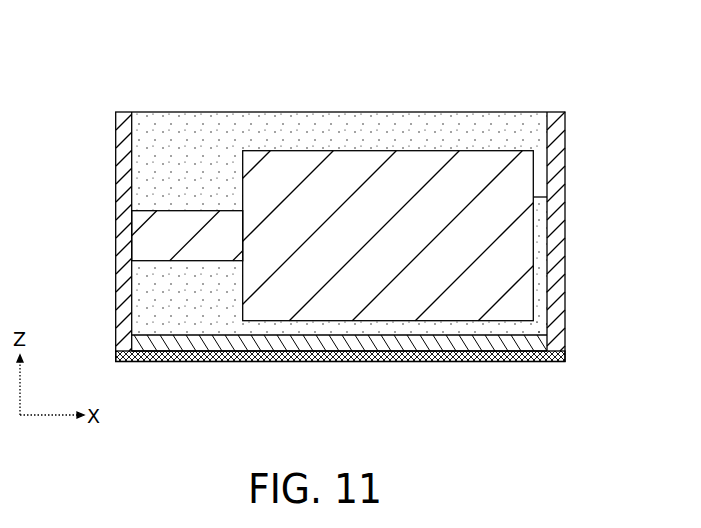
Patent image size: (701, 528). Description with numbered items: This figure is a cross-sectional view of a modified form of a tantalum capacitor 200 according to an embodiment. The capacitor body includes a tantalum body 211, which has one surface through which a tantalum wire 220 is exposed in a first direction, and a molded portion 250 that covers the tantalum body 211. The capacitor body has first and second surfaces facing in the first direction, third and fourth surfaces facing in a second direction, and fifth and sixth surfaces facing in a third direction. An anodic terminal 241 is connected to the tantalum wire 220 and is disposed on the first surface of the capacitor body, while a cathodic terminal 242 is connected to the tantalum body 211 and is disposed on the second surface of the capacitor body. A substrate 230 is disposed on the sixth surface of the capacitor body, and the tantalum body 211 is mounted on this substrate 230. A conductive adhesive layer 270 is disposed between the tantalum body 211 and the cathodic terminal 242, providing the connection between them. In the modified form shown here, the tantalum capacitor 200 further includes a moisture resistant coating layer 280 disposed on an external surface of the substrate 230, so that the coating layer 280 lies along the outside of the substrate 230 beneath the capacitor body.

The tantalum capacitor 200 is at (362, 47).
The tantalum body 211 is at (427, 165).
The tantalum wire 220 is at (211, 216).
The substrate 230 is at (330, 343).
The anodic terminal 241 is at (116, 237).
The cathodic terminal 242 is at (565, 237).
The molded portion 250 is at (493, 130).
The conductive adhesive layer 270 is at (540, 280).
The moisture resistant coating layer 280 is at (427, 362).